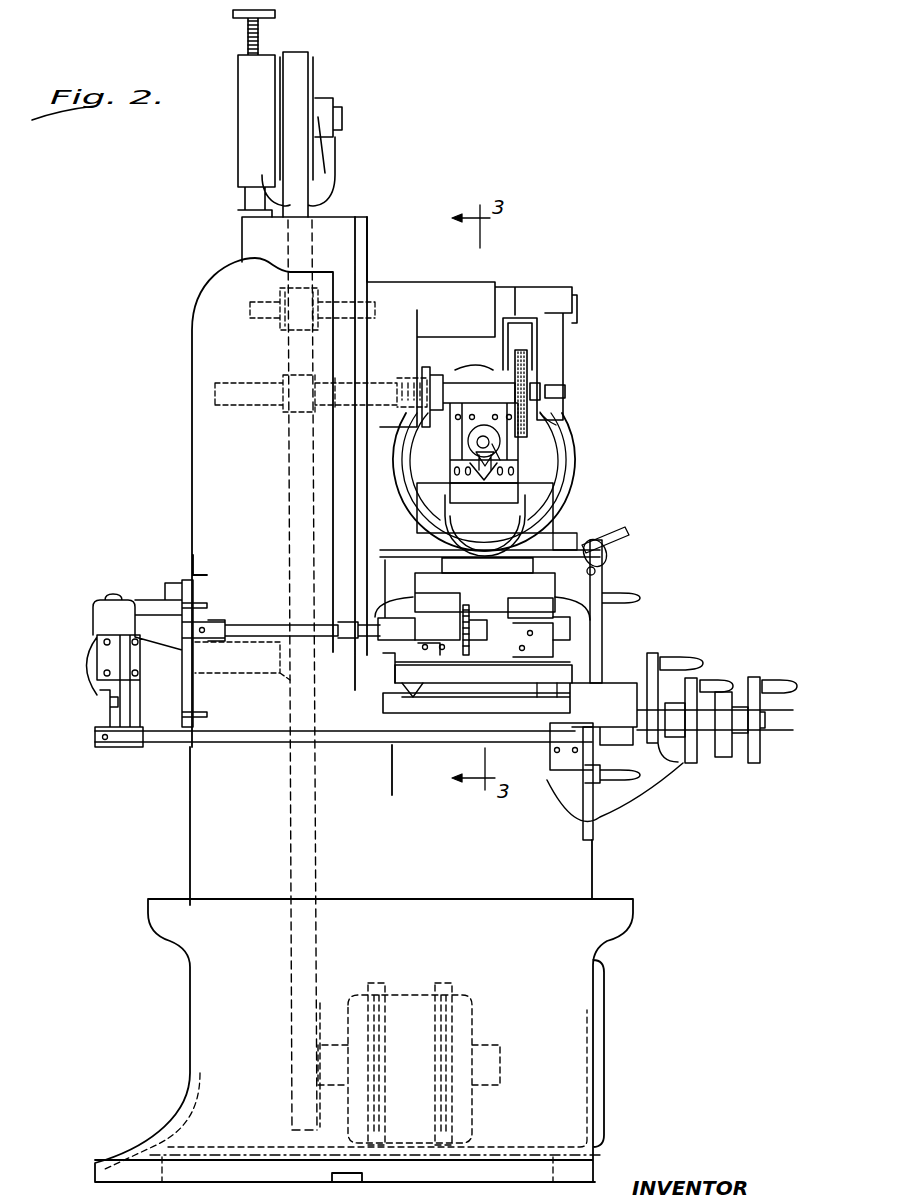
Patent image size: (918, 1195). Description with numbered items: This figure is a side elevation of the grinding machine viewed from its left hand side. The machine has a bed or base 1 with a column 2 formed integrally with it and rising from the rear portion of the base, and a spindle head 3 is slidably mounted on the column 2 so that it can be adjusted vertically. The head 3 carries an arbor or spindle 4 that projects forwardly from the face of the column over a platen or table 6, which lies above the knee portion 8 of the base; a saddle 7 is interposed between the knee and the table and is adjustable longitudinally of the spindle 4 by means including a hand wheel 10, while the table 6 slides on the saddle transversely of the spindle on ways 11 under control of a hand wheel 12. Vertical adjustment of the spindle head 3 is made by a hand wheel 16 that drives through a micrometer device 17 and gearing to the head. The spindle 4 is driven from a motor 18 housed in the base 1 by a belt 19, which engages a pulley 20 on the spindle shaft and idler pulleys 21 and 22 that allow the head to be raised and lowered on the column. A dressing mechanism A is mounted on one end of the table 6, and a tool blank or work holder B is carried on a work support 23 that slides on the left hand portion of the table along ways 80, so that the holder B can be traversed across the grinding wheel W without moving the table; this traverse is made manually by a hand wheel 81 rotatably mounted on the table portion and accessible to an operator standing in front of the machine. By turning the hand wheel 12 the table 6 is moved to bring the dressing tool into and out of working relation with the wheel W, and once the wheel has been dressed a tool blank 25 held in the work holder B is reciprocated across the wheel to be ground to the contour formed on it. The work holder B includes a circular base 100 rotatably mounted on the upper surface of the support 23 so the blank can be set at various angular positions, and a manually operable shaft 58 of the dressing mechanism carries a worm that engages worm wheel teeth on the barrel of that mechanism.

The bed or base 1 is at (190, 828).
The column 2 is at (192, 455).
The spindle head 3 is at (403, 296).
The arbor or spindle 4 is at (457, 387).
The platen or table 6 is at (567, 673).
The saddle 7 is at (610, 710).
The knee portion 8 is at (600, 835).
The hand wheel 10 is at (690, 762).
The ways 11 is at (420, 687).
The hand wheel 12 is at (655, 660).
The hand wheel 16 is at (758, 762).
The micrometer device 17 is at (727, 758).
The motor 18 is at (416, 993).
The belt 19 is at (318, 872).
The pulley 20 is at (286, 383).
The idler pulley 21 is at (283, 295).
The idler pulley 22 is at (315, 72).
The work support 23 is at (423, 578).
The tool blank 25 is at (490, 452).
The manually operable shaft 58 is at (637, 512).
The ways 80 is at (520, 590).
The hand wheel 81 is at (602, 620).
The circular base 100 is at (578, 540).
The dressing mechanism A is at (553, 434).
The tool blank or work holder B is at (528, 500).
The grinding wheel W is at (538, 414).